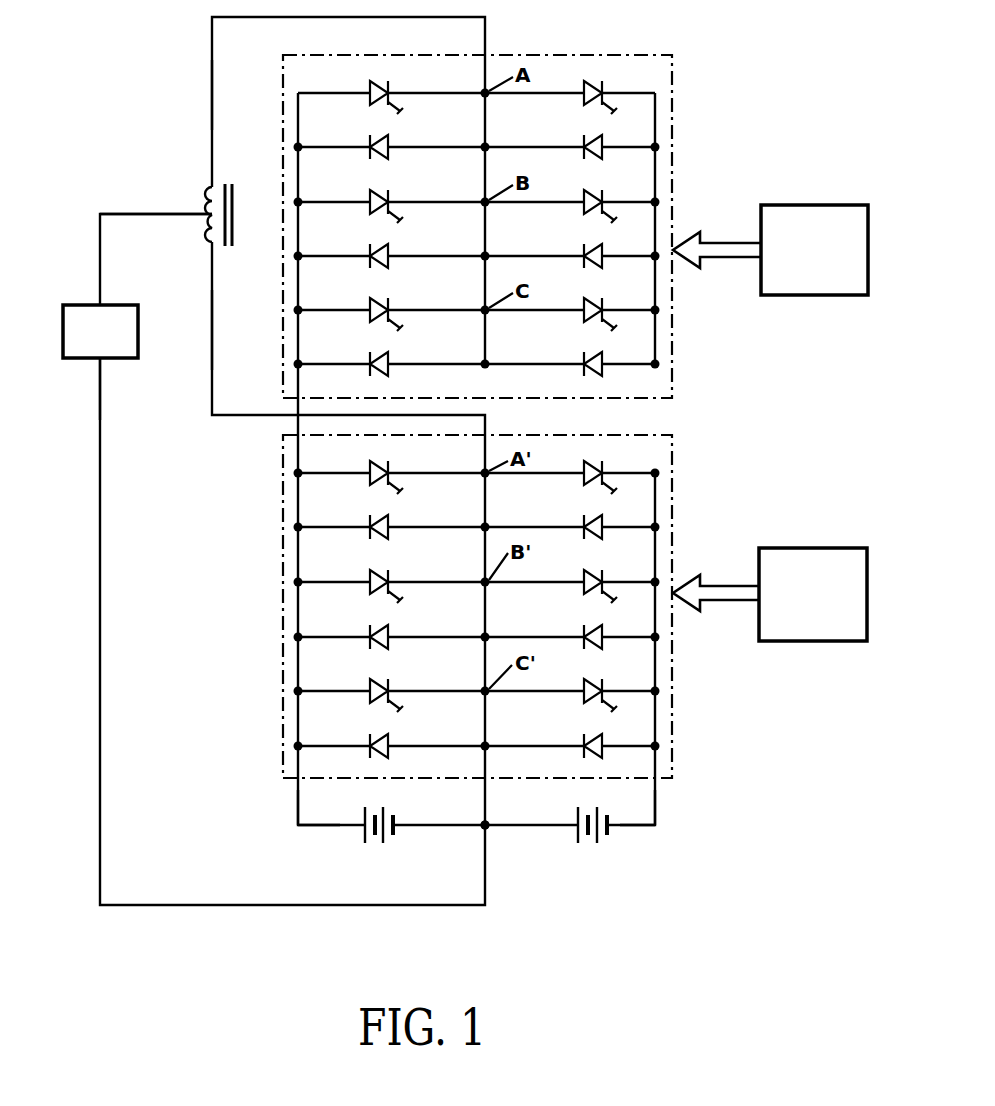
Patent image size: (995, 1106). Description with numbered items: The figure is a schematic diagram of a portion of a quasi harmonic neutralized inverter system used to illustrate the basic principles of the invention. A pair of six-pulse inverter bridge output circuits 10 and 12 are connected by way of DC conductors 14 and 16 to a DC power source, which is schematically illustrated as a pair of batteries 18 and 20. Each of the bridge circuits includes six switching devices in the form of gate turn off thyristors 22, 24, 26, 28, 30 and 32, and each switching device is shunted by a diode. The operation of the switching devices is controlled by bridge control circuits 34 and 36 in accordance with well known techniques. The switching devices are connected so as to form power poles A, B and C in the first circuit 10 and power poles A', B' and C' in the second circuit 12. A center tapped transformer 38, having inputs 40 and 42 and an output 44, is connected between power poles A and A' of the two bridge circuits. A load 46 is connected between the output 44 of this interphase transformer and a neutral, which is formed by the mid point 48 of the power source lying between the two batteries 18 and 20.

The six-pulse inverter bridge output circuit 10 is at (676, 152).
The six-pulse inverter bridge output circuit 12 is at (676, 488).
The DC conductor 14 is at (294, 810).
The DC conductor 16 is at (656, 811).
The battery 18 is at (368, 846).
The battery 20 is at (583, 846).
The gate turn off thyristor 22 is at (372, 80).
The gate turn off thyristor 24 is at (578, 82).
The gate turn off thyristor 26 is at (372, 187).
The gate turn off thyristor 28 is at (578, 190).
The gate turn off thyristor 30 is at (372, 295).
The gate turn off thyristor 32 is at (578, 296).
The bridge control circuit 34 is at (803, 296).
The bridge control circuit 36 is at (780, 643).
The center tapped transformer 38 is at (221, 181).
The input 40 is at (211, 93).
The input 42 is at (212, 323).
The output 44 is at (140, 212).
The load 46 is at (120, 360).
The mid point 48 is at (488, 822).